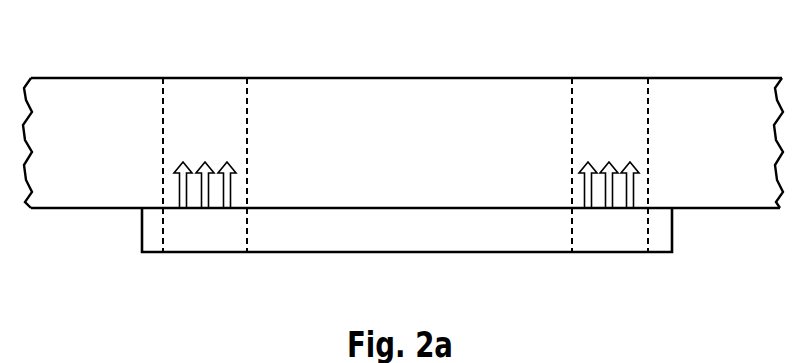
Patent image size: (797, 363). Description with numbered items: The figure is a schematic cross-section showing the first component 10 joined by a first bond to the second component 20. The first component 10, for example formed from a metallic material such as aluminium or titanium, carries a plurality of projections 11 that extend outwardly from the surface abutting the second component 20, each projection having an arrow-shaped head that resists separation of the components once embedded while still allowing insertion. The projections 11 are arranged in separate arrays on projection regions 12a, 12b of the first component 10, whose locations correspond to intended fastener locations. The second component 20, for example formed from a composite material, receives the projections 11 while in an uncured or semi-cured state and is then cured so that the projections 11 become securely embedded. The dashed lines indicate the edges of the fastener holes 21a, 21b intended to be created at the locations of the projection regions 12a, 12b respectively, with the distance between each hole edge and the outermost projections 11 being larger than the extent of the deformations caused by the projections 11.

The first component 10 is at (415, 245).
The second component 20 is at (415, 158).
The projections 11 is at (227, 162).
The projection region 12a is at (203, 218).
The projection region 12b is at (611, 227).
The fastener hole 21a is at (162, 68).
The fastener hole 21b is at (571, 68).